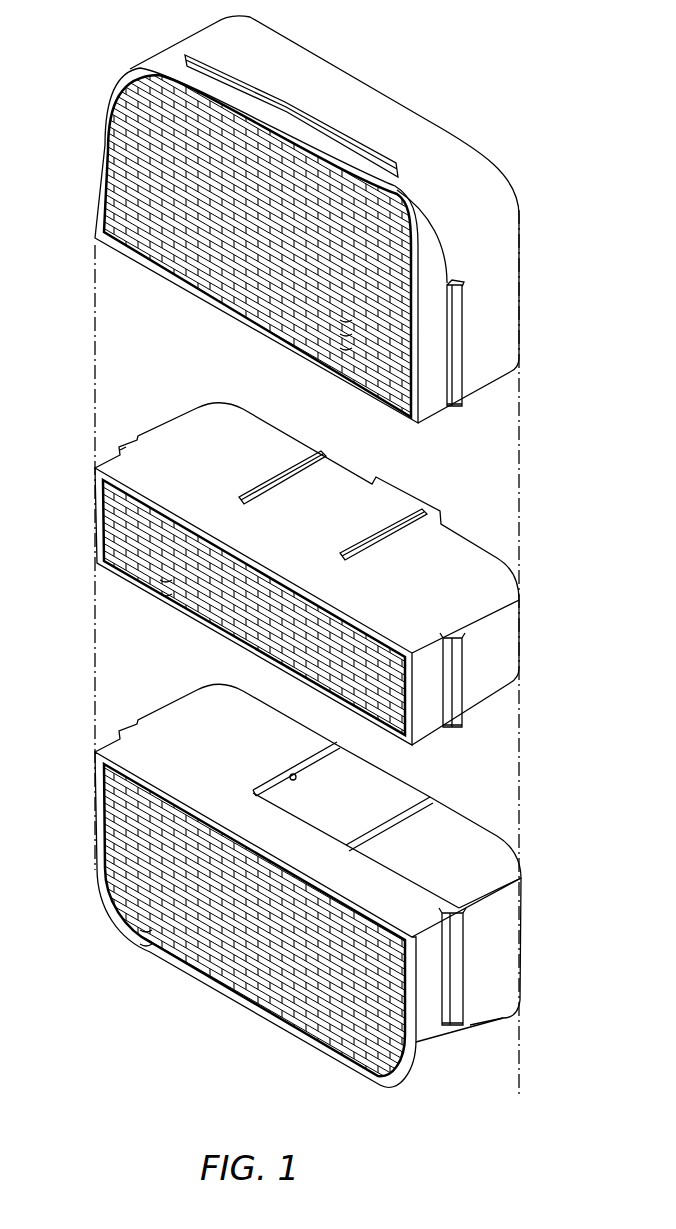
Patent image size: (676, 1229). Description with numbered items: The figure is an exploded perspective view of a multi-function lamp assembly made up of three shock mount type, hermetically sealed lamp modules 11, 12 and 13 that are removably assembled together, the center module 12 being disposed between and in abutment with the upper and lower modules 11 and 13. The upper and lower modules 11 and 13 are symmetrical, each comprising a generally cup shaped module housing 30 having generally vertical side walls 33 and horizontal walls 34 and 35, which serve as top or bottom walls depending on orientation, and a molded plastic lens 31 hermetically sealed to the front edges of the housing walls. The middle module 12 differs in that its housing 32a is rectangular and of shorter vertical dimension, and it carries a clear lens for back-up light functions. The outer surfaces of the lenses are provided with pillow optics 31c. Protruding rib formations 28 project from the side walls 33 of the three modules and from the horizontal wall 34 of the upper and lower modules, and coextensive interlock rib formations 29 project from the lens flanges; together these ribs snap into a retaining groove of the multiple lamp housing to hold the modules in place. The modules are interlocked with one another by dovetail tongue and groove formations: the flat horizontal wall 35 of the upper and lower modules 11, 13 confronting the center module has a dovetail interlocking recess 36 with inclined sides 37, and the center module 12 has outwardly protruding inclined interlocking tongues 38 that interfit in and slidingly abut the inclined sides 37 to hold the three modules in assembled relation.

The upper lamp module 11 is at (523, 211).
The center lamp module 12 is at (524, 603).
The lower lamp module 13 is at (524, 886).
The protruding rib formation 28 is at (460, 310).
The interlock rib formation 29 is at (452, 408).
The module housing 30 is at (428, 118).
The lens 31 is at (96, 180).
The pillow optics 31c is at (378, 384).
The housing of center module 32a is at (178, 432).
The side wall 33 is at (478, 365).
The horizontal wall 34 is at (318, 85).
The flat horizontal wall 35 is at (500, 855).
The dovetail interlocking recess 36 is at (403, 800).
The inclined side 37 is at (293, 773).
The interlocking tongue 38 is at (347, 552).